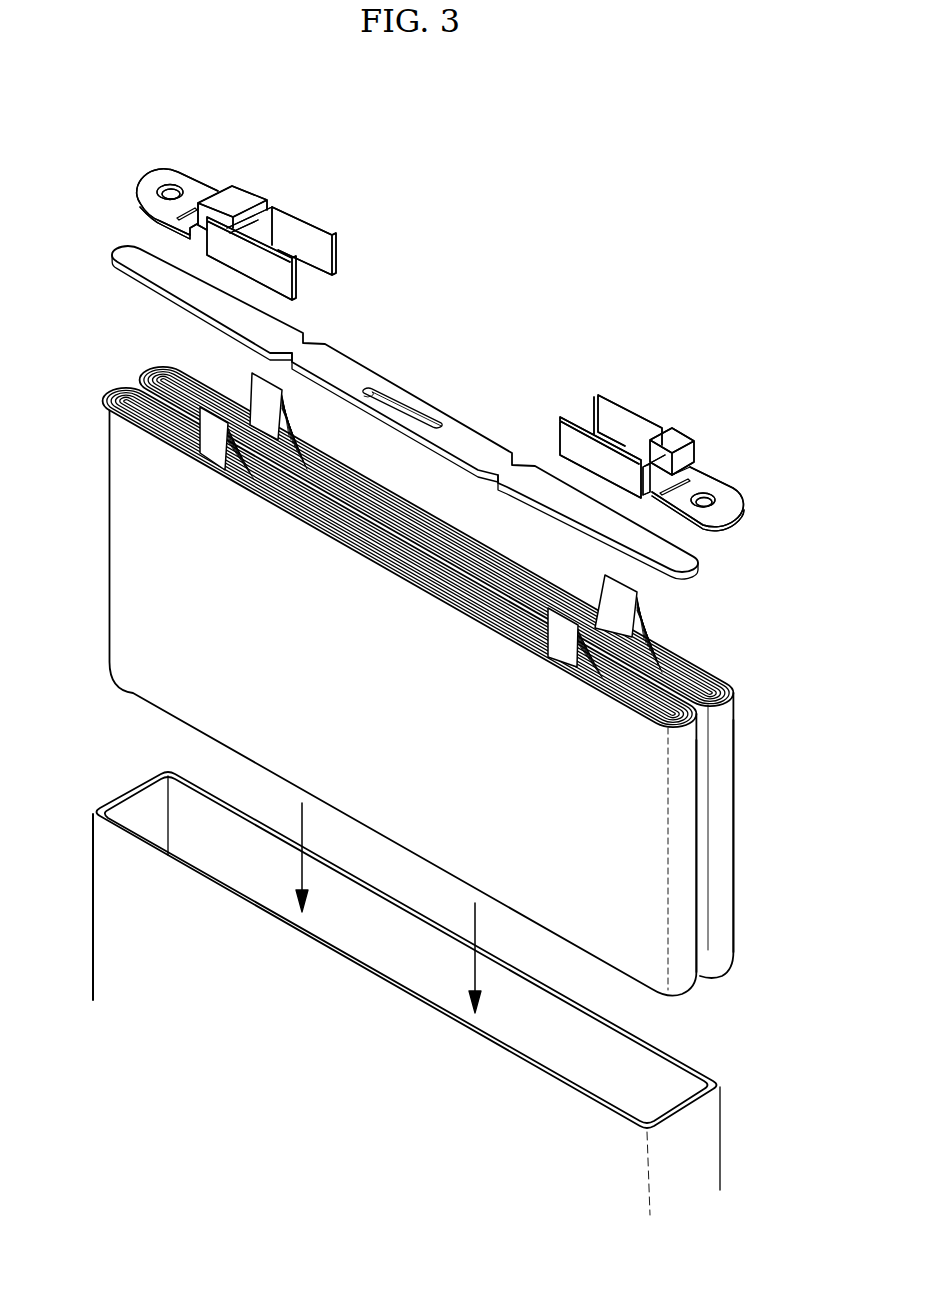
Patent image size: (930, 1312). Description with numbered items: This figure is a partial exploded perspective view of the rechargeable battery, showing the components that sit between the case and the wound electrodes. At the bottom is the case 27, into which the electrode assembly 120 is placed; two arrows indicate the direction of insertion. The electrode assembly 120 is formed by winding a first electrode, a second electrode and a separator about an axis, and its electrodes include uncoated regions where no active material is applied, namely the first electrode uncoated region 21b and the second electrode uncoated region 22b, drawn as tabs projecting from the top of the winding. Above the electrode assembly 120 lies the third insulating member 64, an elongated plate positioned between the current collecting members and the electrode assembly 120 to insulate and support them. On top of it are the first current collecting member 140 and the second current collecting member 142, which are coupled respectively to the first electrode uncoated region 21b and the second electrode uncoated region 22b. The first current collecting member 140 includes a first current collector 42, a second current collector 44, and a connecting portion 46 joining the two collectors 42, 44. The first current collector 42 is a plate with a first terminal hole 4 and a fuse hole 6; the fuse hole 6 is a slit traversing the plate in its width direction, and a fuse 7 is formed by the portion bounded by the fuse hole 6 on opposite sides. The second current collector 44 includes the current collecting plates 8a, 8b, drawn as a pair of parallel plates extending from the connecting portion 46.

The second current collecting member 142 is at (259, 175).
The first current collecting member 140 is at (718, 406).
The first current collector 42 is at (147, 181).
The first terminal hole 4 is at (168, 186).
The fuse 7 is at (177, 212).
The fuse hole 6 is at (198, 205).
The connecting portion 46 is at (190, 232).
The second current collector 44 is at (434, 327).
The current collecting plate 8a is at (333, 272).
The current collecting plate 8b is at (436, 239).
The third insulating member 64 is at (353, 363).
The second electrode uncoated region 22b is at (255, 382).
The first electrode uncoated region 21b is at (640, 614).
The electrode assembly 120 is at (737, 978).
The case 27 is at (722, 1130).